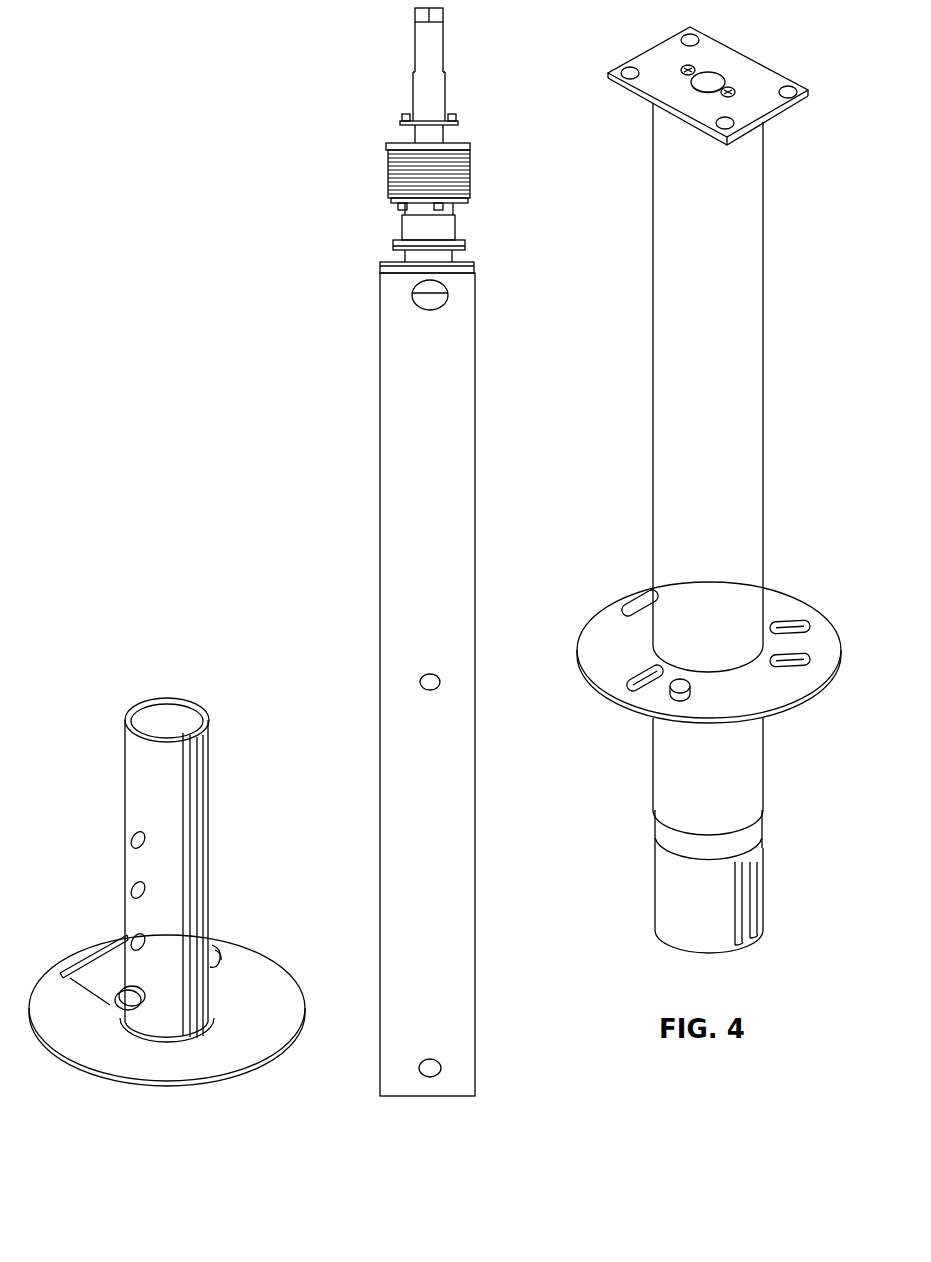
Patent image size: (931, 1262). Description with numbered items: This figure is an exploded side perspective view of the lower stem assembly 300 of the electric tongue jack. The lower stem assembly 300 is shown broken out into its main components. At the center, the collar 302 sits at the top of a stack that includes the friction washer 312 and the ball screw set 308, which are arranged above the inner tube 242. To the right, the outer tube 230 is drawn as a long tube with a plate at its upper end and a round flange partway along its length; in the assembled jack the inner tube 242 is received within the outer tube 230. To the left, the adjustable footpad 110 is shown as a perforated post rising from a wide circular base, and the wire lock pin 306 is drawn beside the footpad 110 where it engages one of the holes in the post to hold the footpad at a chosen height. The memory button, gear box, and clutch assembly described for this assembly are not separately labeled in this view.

The collar 302 is at (428, 50).
The friction washer 312 is at (398, 143).
The ball screw set 308 is at (405, 185).
The inner tube 242 is at (398, 362).
The outer tube 230 is at (737, 268).
The lower stem assembly 300 is at (132, 514).
The adjustable footpad 110 is at (167, 787).
The wire lock pin 306 is at (93, 980).